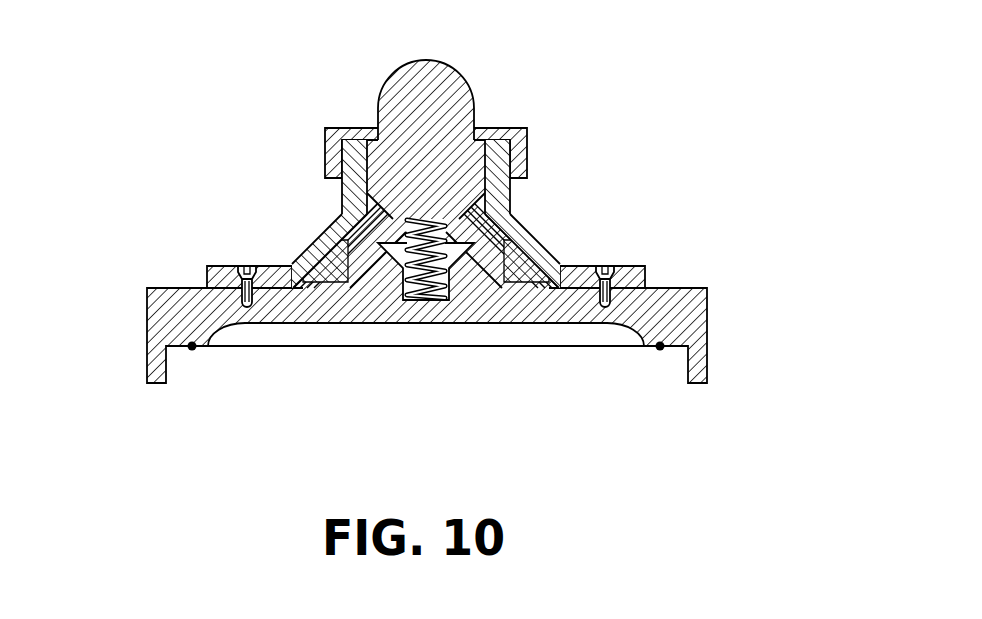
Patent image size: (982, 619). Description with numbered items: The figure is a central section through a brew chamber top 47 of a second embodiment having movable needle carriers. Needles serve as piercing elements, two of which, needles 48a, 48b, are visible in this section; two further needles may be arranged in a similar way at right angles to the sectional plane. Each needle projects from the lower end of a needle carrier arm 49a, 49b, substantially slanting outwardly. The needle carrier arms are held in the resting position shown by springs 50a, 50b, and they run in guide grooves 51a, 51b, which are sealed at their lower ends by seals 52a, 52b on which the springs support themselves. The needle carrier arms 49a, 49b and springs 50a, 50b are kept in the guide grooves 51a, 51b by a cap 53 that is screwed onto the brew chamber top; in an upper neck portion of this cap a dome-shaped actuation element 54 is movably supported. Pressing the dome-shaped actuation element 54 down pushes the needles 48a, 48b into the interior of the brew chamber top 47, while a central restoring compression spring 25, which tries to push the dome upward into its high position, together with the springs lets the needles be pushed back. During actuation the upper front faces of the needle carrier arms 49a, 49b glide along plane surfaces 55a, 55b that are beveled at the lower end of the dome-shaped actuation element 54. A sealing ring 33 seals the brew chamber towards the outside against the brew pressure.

The dome-shaped actuation element 54 is at (448, 92).
The plane surface 55a is at (370, 192).
The plane surface 55b is at (511, 184).
The cap 53 is at (343, 165).
The needle carrier arm 49a is at (340, 222).
The needle carrier arm 49b is at (503, 237).
The guide groove 51a is at (298, 265).
The guide groove 51b is at (535, 255).
The spring 50a is at (297, 278).
The spring 50b is at (540, 290).
The needle 48a is at (291, 323).
The needle 48b is at (563, 323).
The seal 52a is at (297, 285).
The seal 52b is at (557, 285).
The brew chamber top 47 is at (147, 352).
The sealing ring 33 is at (193, 350).
The compression spring 25 is at (425, 295).